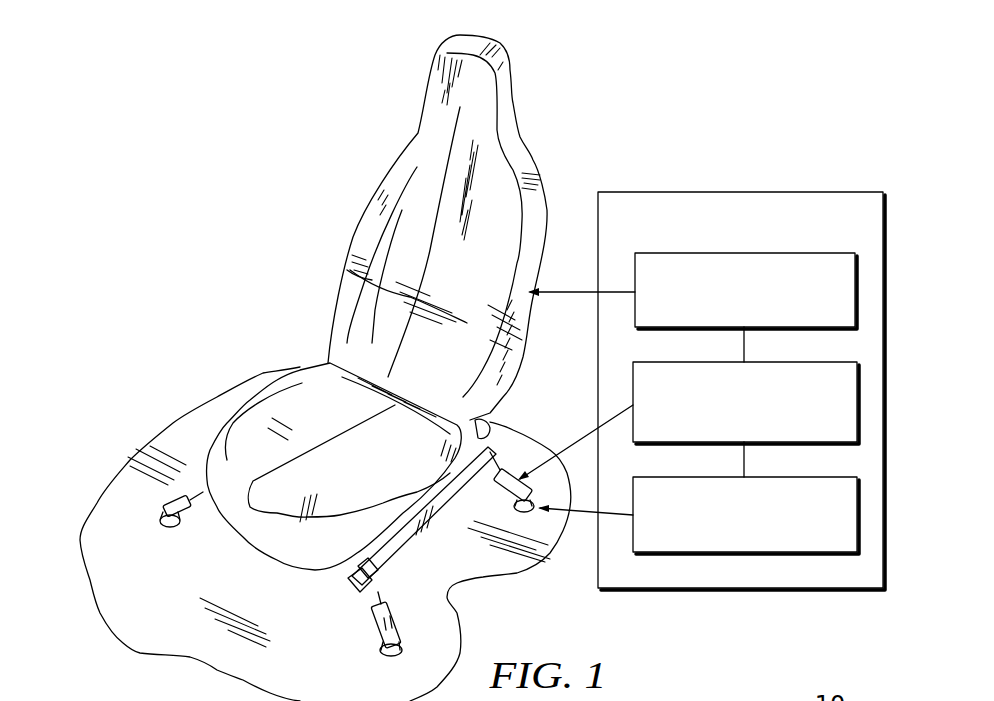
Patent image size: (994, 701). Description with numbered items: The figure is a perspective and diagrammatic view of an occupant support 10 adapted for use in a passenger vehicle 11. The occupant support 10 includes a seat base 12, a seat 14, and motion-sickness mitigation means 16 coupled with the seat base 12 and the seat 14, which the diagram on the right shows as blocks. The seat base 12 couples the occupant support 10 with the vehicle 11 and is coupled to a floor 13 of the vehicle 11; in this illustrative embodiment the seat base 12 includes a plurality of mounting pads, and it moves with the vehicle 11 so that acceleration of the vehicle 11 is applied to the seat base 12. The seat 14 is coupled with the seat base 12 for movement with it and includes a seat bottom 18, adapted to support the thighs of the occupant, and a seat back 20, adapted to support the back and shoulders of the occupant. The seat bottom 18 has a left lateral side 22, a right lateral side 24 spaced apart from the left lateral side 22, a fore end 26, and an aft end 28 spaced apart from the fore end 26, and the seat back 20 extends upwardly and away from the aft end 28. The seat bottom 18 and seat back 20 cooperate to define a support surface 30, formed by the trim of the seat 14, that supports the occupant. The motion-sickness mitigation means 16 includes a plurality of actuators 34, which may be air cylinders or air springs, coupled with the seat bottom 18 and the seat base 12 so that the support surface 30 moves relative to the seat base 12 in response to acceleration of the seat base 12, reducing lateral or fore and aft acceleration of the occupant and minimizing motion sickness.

The occupant support 10 is at (712, 180).
The vehicle 11 is at (112, 512).
The seat base 12 is at (860, 512).
The floor 13 is at (146, 582).
The seat 14 is at (860, 292).
The motion-sickness mitigation means 16 is at (860, 400).
The seat bottom 18 is at (208, 445).
The seat back 20 is at (340, 225).
The left lateral side 22 is at (432, 487).
The right lateral side 24 is at (232, 393).
The fore end 26 is at (240, 557).
The aft end 28 is at (402, 375).
The support surface 30 is at (325, 360).
The actuators 34 is at (360, 622).